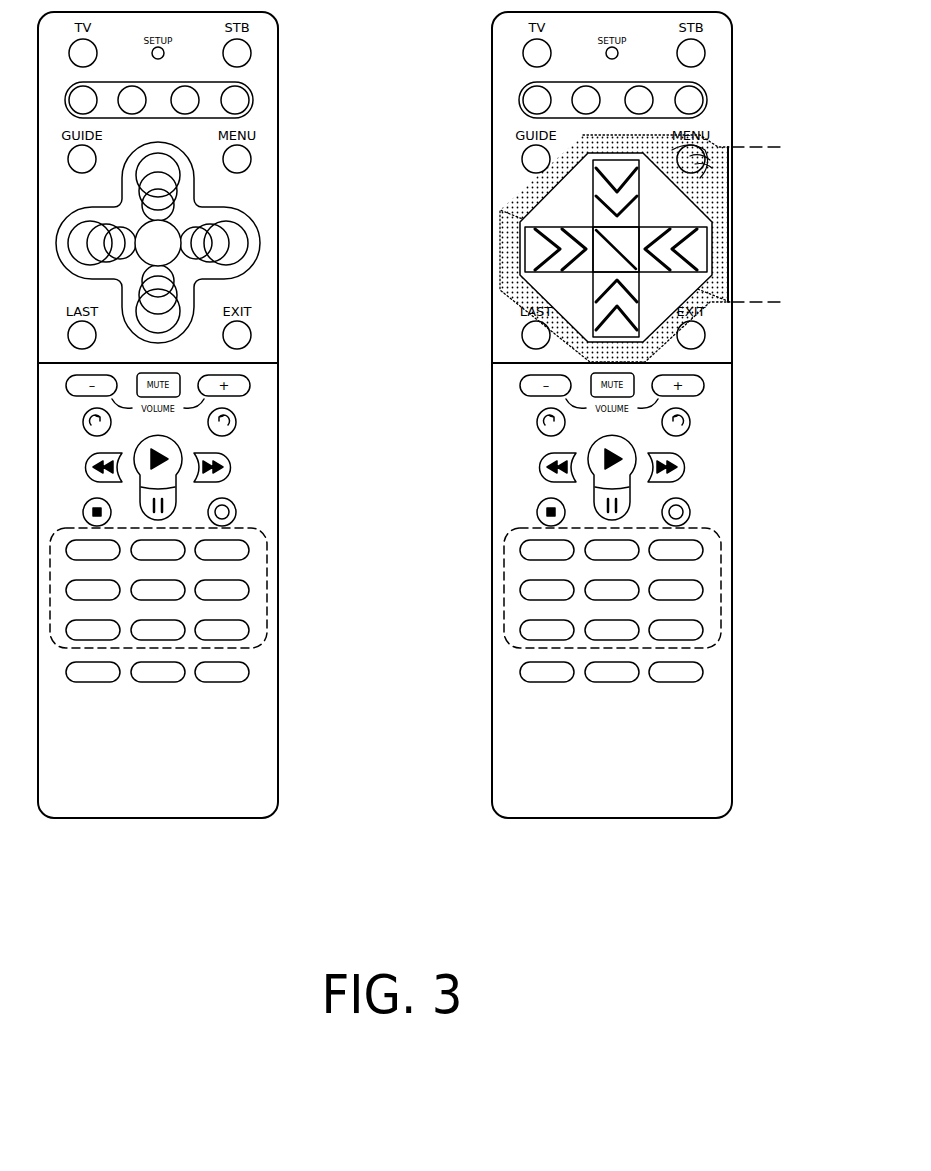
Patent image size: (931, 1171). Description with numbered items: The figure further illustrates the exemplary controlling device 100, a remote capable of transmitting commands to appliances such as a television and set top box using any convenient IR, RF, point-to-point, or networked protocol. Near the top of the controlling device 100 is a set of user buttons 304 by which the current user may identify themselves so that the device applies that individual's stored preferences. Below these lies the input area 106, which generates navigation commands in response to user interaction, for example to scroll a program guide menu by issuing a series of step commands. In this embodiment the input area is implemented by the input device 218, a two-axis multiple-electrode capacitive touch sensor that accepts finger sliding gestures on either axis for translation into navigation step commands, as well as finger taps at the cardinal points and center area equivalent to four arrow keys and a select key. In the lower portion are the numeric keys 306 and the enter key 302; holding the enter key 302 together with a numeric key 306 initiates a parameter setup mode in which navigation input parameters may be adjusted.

The controlling device 100 is at (326, 868).
The input area 106 is at (257, 225).
The input device 218 is at (687, 277).
The enter key 302 is at (233, 681).
The user buttons 304 is at (247, 82).
The numeric key 306 is at (260, 557).